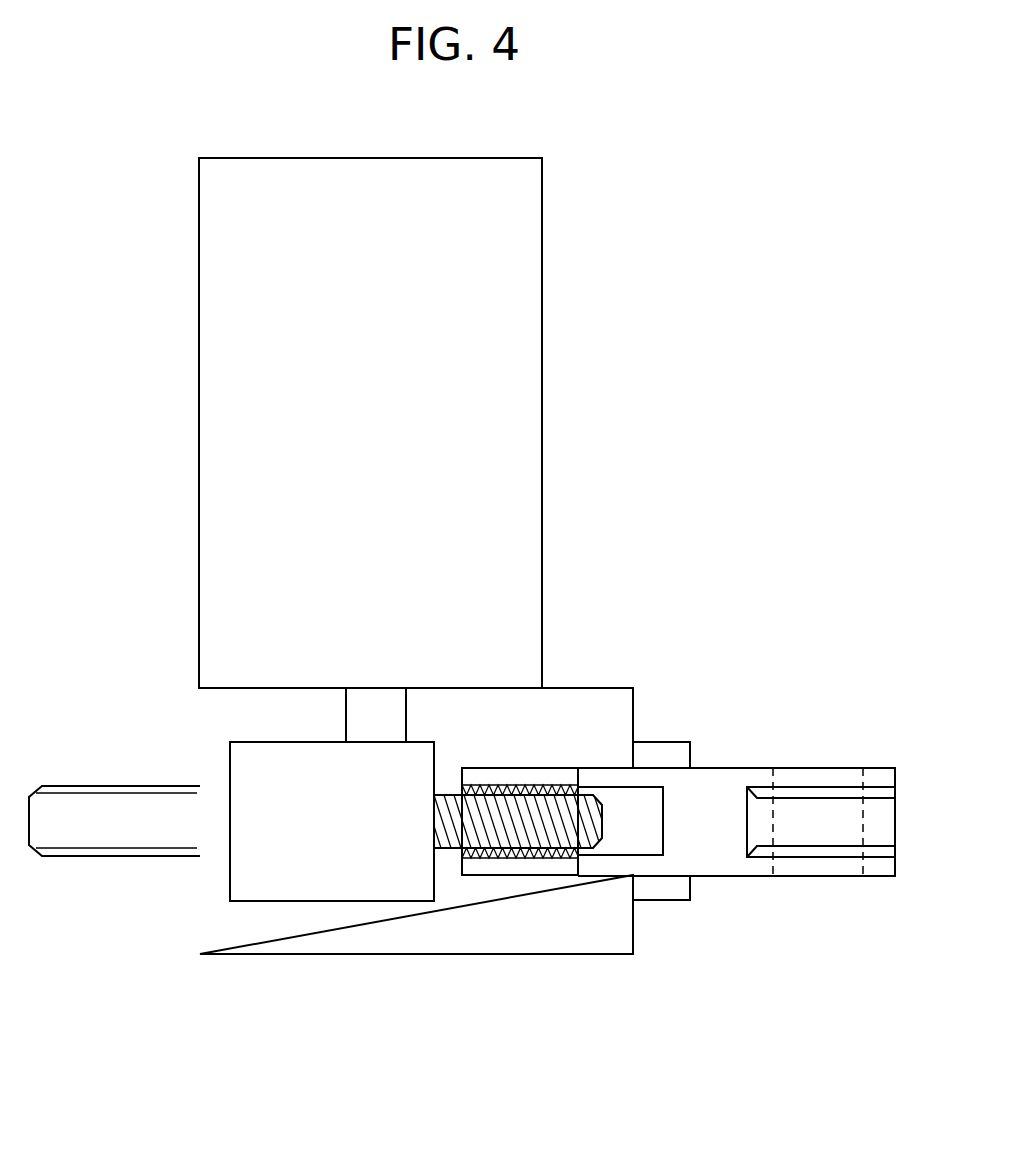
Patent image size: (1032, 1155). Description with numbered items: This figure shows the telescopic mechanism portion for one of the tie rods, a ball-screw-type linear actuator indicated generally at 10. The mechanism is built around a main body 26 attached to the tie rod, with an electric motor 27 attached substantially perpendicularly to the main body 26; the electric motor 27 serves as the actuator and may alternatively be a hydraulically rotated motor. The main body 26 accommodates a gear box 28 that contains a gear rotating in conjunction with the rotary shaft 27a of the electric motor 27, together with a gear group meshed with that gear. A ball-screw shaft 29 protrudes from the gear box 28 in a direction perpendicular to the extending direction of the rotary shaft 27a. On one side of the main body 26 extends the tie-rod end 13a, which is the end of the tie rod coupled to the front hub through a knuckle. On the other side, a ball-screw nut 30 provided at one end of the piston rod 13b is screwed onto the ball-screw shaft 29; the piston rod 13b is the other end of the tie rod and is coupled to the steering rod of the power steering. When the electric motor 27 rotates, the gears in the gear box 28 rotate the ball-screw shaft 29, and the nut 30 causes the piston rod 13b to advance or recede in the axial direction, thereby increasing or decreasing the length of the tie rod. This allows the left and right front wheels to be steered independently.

The drive unit 10 is at (727, 457).
The tie-rod end 13a is at (87, 786).
The piston rod 13b is at (727, 768).
The main body 26 is at (413, 996).
The electric motor 27 is at (542, 374).
The rotary shaft 27a is at (345, 722).
The gear box 28 is at (281, 901).
The ball-screw shaft 29 is at (440, 850).
The ball-screw nut 30 is at (518, 787).